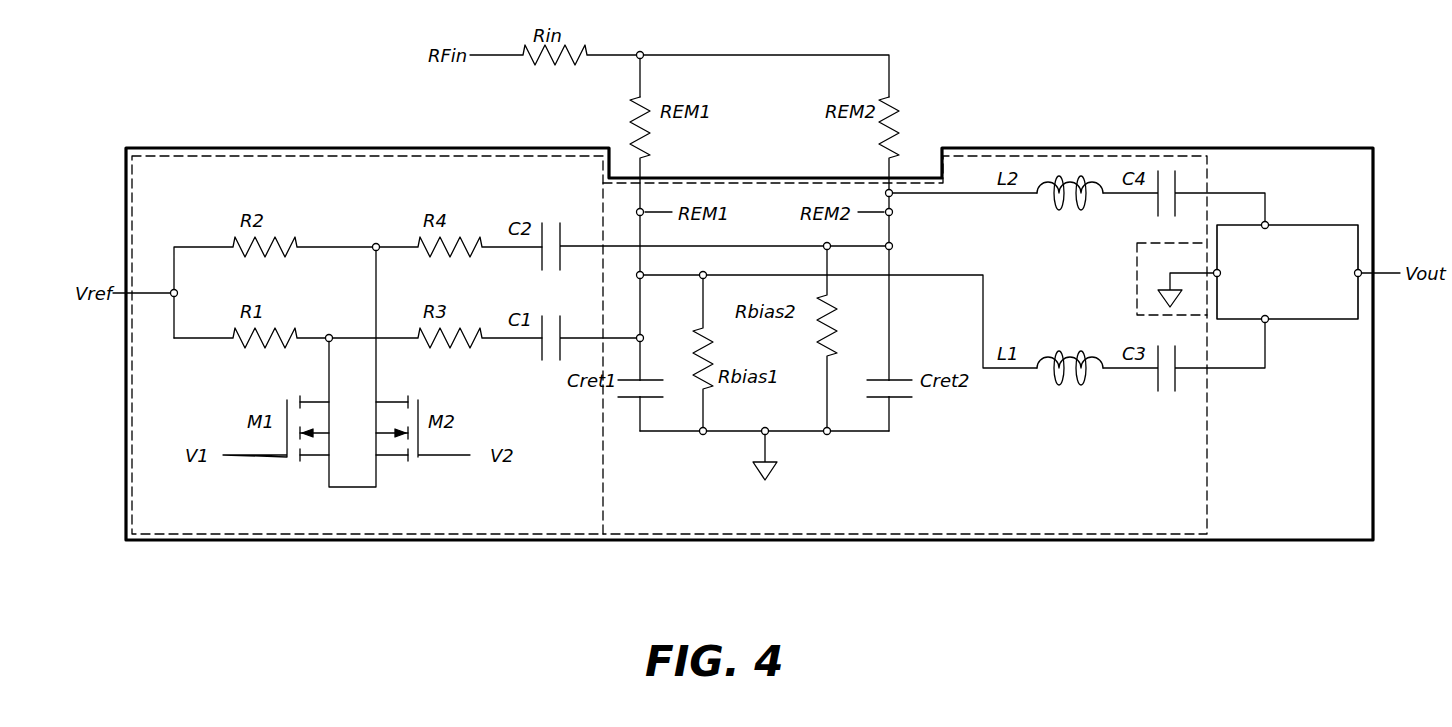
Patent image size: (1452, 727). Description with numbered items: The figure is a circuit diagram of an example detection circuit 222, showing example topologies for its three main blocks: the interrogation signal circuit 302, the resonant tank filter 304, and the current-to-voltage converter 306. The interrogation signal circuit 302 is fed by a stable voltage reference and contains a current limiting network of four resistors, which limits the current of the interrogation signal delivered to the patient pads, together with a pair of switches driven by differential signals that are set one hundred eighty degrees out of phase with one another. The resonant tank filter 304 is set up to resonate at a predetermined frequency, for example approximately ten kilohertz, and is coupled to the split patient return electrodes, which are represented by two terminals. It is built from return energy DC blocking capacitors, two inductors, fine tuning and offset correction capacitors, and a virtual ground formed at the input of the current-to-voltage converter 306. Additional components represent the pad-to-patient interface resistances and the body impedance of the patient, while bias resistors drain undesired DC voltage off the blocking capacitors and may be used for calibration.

The detection circuit 222 is at (186, 148).
The interrogation signal circuit 302 is at (420, 540).
The resonant tank filter 304 is at (1078, 540).
The current-to-voltage converter 306 is at (1304, 302).